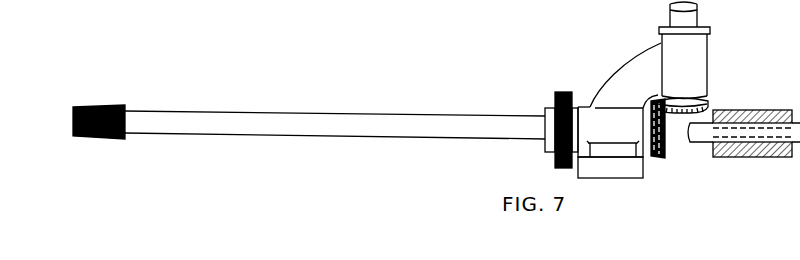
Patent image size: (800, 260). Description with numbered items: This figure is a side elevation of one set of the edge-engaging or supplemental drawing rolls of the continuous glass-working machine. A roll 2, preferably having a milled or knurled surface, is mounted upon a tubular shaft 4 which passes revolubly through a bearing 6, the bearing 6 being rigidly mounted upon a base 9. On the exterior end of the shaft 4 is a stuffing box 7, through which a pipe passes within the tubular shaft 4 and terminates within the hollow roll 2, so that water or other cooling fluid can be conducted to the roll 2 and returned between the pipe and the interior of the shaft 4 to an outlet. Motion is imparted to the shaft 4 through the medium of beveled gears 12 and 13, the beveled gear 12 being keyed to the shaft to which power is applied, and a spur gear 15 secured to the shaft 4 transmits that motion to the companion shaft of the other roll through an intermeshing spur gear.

The roll 2 is at (100, 103).
The tubular shaft 4 is at (246, 117).
The spur gear 15 is at (556, 88).
The bearing 6 is at (613, 127).
The base 9 is at (612, 172).
The beveled gear 13 is at (661, 153).
The beveled gear 12 is at (712, 99).
The stuffing box 7 is at (762, 107).